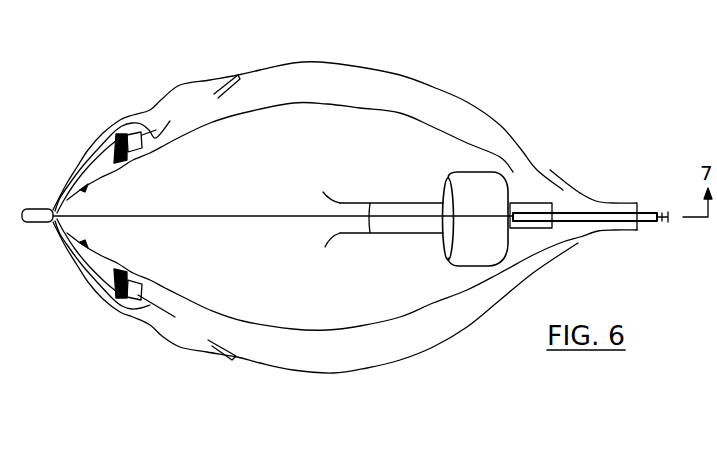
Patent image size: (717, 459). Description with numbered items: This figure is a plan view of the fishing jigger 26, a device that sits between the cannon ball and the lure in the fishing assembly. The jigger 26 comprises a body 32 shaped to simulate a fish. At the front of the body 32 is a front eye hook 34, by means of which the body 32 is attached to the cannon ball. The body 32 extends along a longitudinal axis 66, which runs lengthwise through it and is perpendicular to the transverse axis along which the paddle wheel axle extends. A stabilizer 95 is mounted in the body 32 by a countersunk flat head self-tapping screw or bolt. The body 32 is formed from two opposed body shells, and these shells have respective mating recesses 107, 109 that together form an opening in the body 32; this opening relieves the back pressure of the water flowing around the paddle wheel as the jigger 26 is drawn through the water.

The jigger 26 is at (440, 81).
The body 32 is at (511, 272).
The front eye hook 34 is at (34, 208).
The longitudinal axis 66 is at (247, 219).
The stabilizer 95 is at (573, 219).
The mating recess 107 is at (487, 204).
The mating recess 109 is at (529, 192).